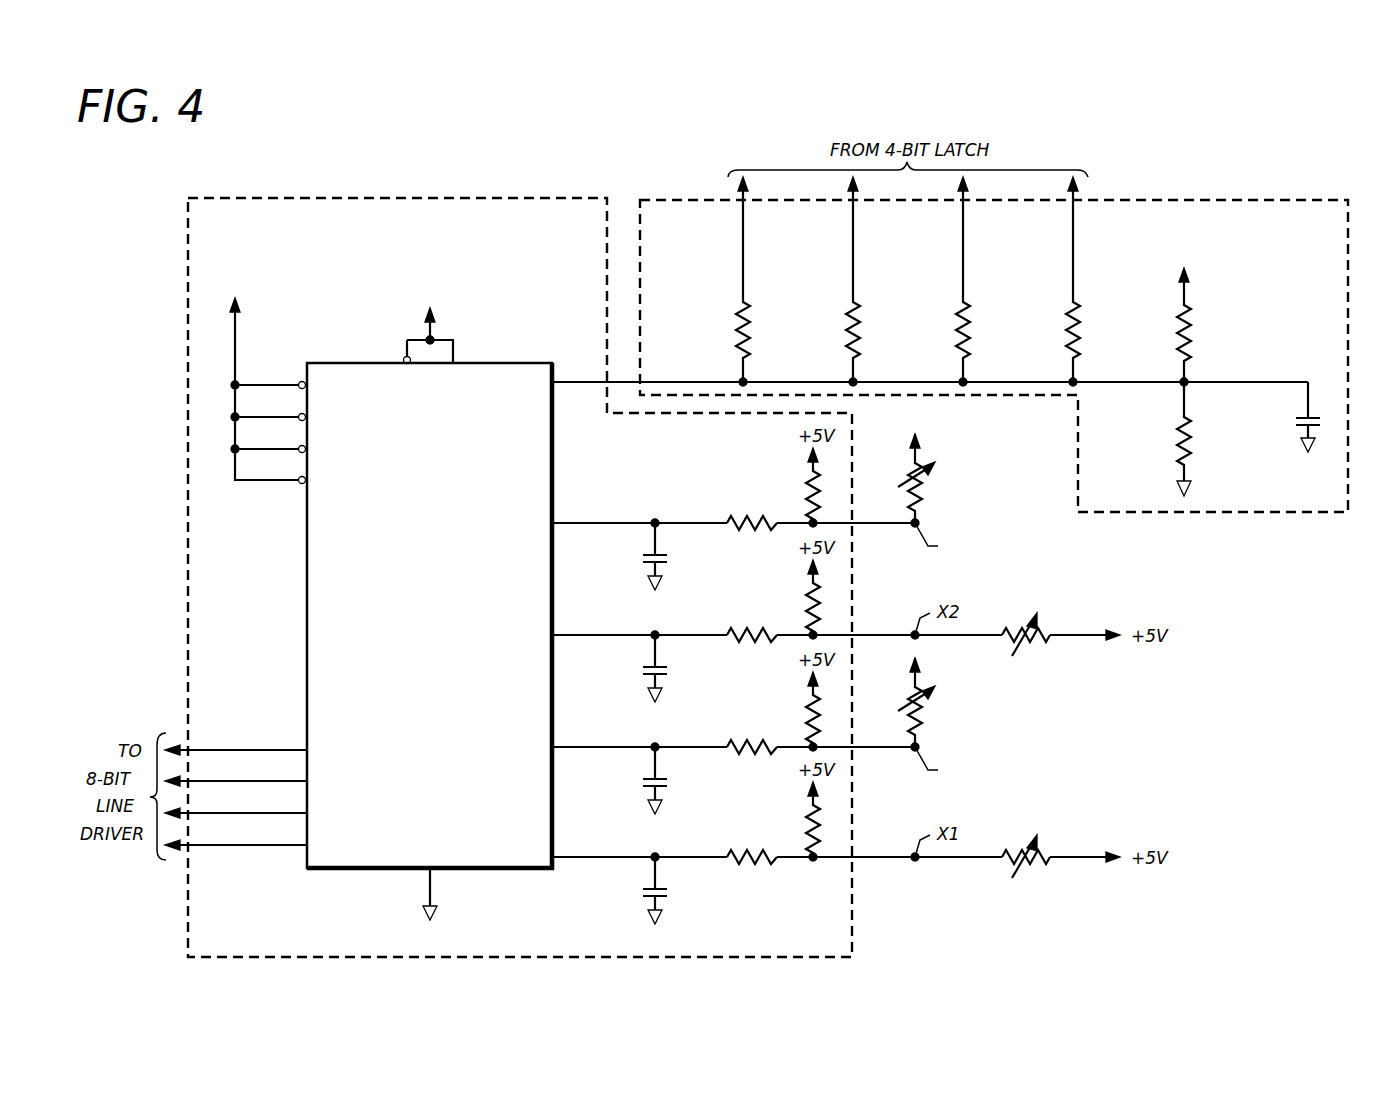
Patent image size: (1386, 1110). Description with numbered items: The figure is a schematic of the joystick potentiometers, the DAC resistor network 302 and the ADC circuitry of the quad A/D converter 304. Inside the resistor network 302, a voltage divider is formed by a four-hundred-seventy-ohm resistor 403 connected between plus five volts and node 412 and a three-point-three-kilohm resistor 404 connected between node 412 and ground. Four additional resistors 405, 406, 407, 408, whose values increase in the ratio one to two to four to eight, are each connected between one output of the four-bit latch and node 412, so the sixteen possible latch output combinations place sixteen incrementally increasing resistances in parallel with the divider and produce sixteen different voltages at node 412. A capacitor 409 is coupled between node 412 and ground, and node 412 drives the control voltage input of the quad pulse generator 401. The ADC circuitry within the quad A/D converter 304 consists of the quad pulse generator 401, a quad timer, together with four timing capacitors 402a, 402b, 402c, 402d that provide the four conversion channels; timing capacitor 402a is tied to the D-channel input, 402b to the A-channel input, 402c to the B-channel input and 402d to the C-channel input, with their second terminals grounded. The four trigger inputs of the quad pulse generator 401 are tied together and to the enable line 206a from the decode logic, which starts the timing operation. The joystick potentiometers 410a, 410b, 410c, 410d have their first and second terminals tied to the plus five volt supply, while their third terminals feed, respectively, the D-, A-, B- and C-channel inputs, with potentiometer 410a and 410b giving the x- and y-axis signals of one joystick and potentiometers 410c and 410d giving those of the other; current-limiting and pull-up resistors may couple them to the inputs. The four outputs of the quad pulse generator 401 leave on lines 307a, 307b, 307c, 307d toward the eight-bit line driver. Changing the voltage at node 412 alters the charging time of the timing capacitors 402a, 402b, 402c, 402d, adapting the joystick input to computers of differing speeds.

The enable line 206a is at (237, 345).
The resistor network 302 is at (1215, 512).
The quad A/D converter 304 is at (484, 957).
The data path line 307a is at (236, 836).
The data path line 307b is at (236, 804).
The data path line 307c is at (236, 772).
The data path line 307d is at (236, 741).
The quad pulse generator 401 is at (305, 583).
The timing capacitor 402a is at (645, 885).
The timing capacitor 402b is at (645, 775).
The timing capacitor 402c is at (645, 663).
The timing capacitor 402d is at (645, 551).
The resistor 403 is at (1172, 326).
The resistor 404 is at (1172, 436).
The resistor 405 is at (1063, 323).
The resistor 406 is at (953, 323).
The resistor 407 is at (843, 323).
The resistor 408 is at (733, 323).
The capacitor 409 is at (1298, 412).
The joystick potentiometer 410a is at (1030, 872).
The joystick potentiometer 410b is at (925, 714).
The joystick potentiometer 410c is at (1030, 650).
The joystick potentiometer 410d is at (925, 490).
The node 412 is at (1184, 382).